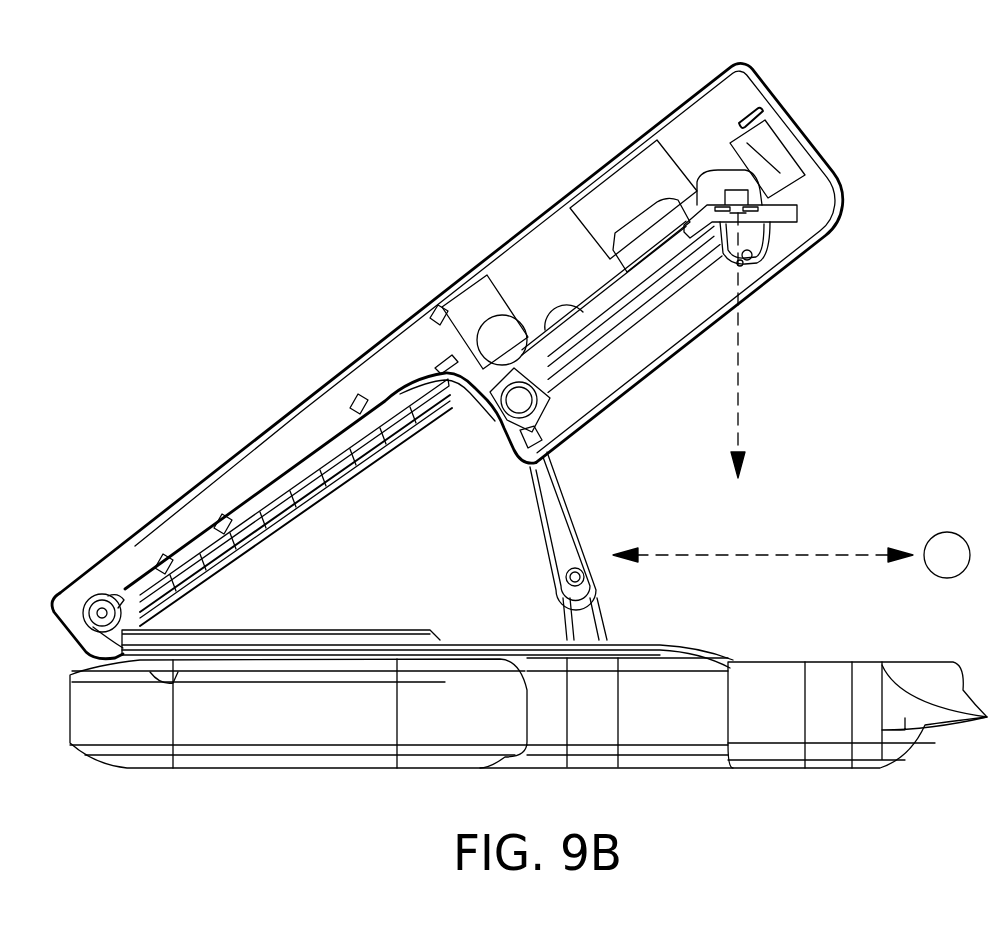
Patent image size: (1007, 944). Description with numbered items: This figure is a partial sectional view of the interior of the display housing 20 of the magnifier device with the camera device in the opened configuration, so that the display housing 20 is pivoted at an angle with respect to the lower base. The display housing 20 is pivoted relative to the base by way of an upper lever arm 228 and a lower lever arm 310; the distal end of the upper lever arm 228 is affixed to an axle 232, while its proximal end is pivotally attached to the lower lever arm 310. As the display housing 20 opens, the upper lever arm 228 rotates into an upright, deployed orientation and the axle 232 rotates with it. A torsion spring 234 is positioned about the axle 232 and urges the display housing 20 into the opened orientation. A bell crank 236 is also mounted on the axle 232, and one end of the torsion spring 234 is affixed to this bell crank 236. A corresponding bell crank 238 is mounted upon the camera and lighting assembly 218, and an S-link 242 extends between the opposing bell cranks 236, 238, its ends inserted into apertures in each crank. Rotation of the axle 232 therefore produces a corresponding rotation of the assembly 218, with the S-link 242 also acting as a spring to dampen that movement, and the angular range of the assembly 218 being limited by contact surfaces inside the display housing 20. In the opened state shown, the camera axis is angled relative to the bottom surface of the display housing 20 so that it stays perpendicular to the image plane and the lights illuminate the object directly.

The display housing 20 is at (519, 396).
The assembly 218 is at (792, 215).
The bell crank 238 is at (758, 238).
The S-link 242 is at (627, 353).
The torsion spring 234 is at (487, 394).
The axle 232 is at (519, 401).
The bell crank 236 is at (527, 441).
The upper lever arm 228 is at (578, 500).
The lower lever arm 310 is at (607, 598).